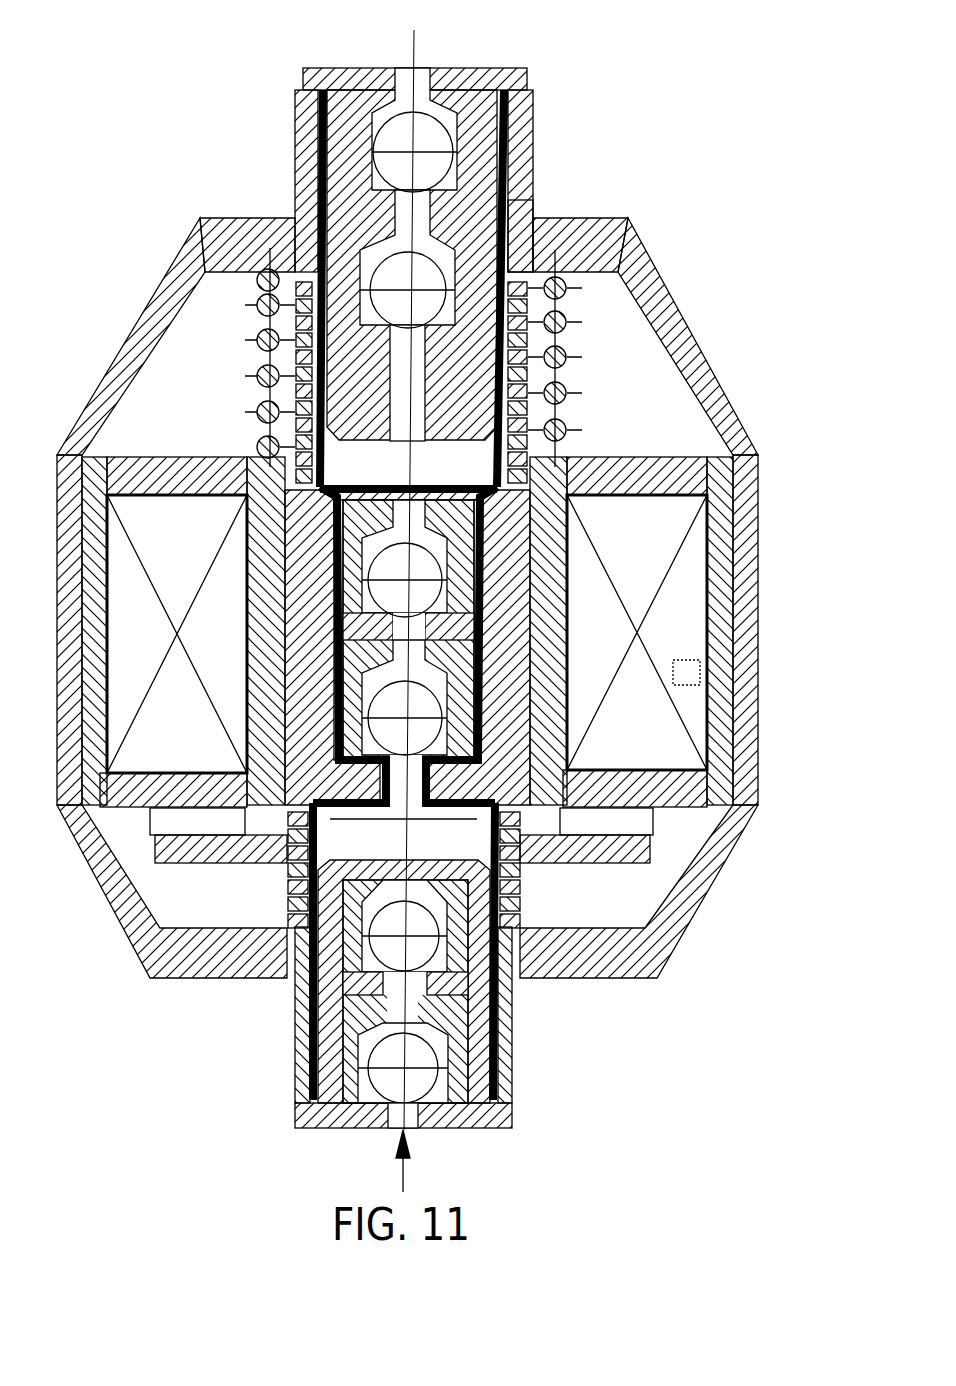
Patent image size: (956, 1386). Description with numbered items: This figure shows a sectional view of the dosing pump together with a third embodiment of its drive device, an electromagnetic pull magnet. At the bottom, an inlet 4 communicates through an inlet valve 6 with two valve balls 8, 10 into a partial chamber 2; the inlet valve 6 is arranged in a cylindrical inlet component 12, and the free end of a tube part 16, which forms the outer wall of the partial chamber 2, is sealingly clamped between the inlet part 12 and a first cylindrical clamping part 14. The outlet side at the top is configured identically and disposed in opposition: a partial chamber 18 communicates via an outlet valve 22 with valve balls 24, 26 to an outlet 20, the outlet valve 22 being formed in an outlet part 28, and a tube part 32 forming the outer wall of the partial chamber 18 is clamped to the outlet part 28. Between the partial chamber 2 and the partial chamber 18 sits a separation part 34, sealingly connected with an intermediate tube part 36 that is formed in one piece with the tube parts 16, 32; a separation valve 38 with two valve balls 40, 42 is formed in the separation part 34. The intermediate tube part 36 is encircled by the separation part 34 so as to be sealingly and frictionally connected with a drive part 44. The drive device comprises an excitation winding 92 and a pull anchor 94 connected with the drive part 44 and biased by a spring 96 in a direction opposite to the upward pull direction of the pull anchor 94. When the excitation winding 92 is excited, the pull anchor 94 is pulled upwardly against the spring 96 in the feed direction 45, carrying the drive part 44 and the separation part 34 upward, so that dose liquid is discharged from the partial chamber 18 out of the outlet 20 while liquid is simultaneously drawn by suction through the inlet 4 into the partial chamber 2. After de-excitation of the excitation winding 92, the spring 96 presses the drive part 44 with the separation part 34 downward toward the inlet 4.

The partial chamber 2 is at (404, 951).
The inlet 4 is at (413, 1130).
The inlet valve 6 is at (495, 1075).
The valve ball 8 is at (443, 937).
The valve ball 10 is at (503, 1038).
The inlet component 12 is at (512, 1122).
The first cylindrical clamping part 14 is at (300, 1063).
The tube part 16 is at (288, 1033).
The partial chamber 18 is at (434, 466).
The outlet 20 is at (418, 77).
The outlet valve 22 is at (537, 115).
The valve ball 24 is at (537, 180).
The valve ball 26 is at (550, 209).
The outlet part 28 is at (498, 68).
The tube part 32 is at (590, 216).
The separation part 34 is at (495, 690).
The intermediate tube part 36 is at (505, 592).
The separation valve 38 is at (445, 548).
The valve ball 40 is at (415, 600).
The valve ball 42 is at (415, 740).
The drive part 44 is at (493, 640).
The feed direction 45 is at (402, 1170).
The excitation winding 92 is at (697, 593).
The pull anchor 94 is at (585, 855).
The spring 96 is at (567, 368).